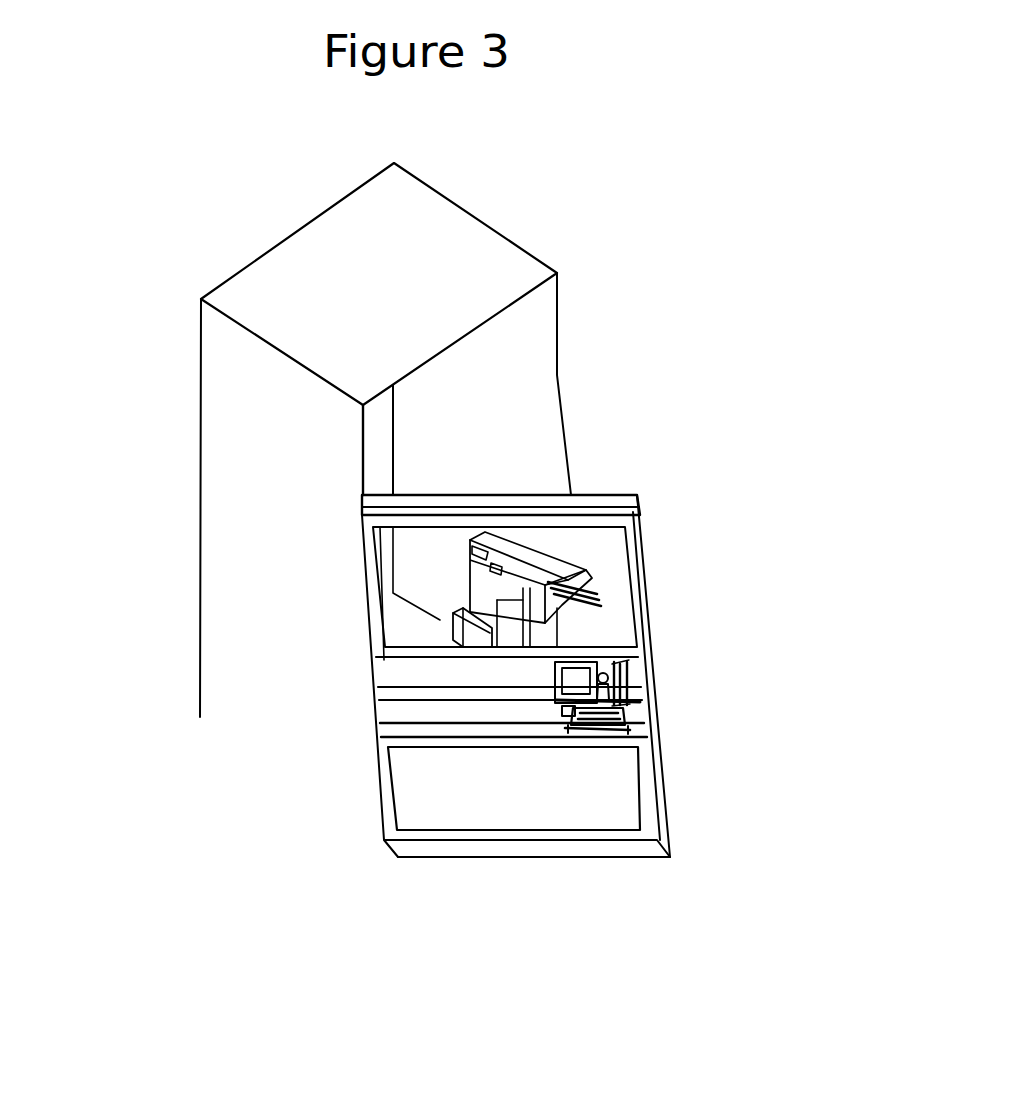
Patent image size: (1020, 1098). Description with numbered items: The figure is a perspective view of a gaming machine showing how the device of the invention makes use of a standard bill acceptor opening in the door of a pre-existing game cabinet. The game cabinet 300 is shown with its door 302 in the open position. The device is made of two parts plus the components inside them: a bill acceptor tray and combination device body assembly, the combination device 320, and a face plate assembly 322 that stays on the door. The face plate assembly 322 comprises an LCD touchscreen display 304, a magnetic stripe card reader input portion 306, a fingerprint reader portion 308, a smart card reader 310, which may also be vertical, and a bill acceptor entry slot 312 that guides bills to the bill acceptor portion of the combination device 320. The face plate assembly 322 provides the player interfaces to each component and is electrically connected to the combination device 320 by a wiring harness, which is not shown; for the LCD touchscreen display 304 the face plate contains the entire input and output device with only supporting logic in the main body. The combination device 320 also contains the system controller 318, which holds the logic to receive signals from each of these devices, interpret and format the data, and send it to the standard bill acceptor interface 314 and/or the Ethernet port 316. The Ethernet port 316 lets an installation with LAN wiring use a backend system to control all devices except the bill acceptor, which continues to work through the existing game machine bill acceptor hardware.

The game cabinet 300 is at (313, 275).
The door 302 is at (515, 858).
The LCD touchscreen display 304 is at (577, 673).
The magnetic stripe card reader input portion 306 is at (622, 672).
The fingerprint reader portion 308 is at (608, 676).
The smart card reader 310 is at (600, 711).
The bill acceptor entry slot 312 is at (590, 727).
The standard bill acceptor interface 314 is at (490, 556).
The Ethernet port 316 is at (497, 568).
The system controller 318 is at (465, 638).
The combination device 320 is at (530, 548).
The face plate assembly 322 is at (562, 712).